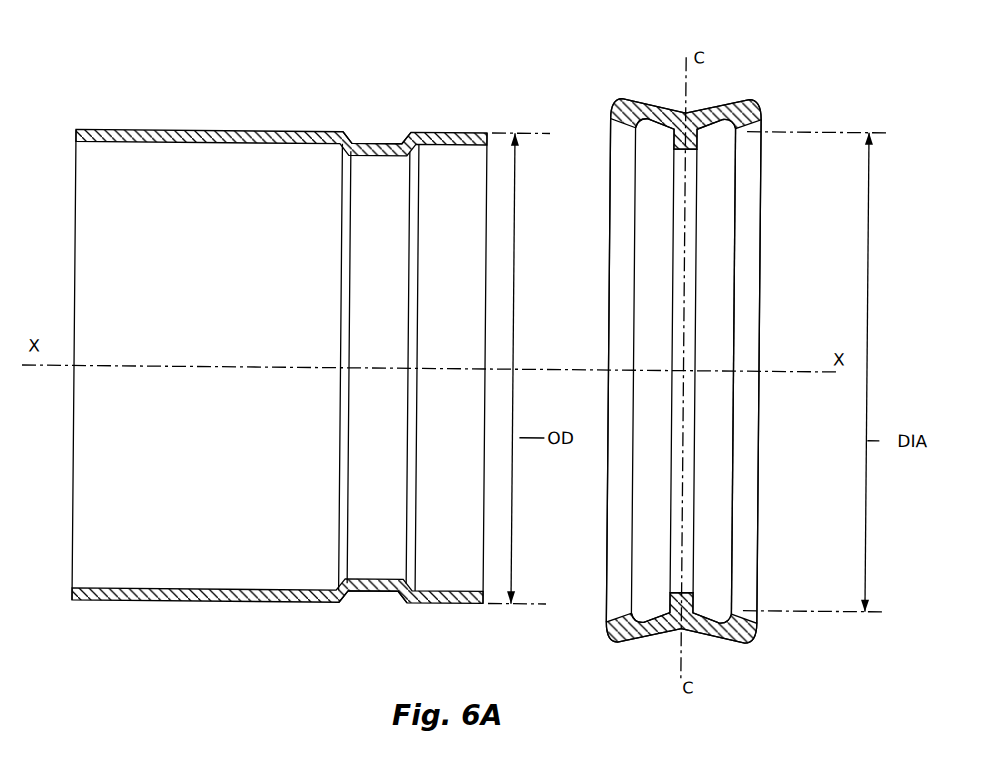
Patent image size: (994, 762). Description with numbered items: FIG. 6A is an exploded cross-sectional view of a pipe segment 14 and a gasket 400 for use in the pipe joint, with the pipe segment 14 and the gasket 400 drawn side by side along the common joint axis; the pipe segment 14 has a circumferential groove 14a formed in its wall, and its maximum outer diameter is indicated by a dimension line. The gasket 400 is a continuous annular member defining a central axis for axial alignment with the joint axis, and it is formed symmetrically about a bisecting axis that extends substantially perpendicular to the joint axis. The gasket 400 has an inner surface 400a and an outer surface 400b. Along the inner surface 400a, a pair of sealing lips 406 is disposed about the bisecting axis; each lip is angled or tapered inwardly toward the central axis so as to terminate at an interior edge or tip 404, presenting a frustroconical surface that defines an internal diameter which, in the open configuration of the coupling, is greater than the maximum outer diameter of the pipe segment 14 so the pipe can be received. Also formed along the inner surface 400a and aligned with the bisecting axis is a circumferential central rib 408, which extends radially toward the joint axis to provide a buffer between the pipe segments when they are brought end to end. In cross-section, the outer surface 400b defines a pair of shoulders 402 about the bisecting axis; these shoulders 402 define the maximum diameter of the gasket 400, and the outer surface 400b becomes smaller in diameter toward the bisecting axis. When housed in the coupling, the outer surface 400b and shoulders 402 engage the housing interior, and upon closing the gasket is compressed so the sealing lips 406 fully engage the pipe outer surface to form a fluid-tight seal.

The pipe segment 14 is at (280, 331).
The circumferential groove 14a is at (384, 136).
The gasket 400 is at (695, 334).
The shoulders 402 is at (614, 96).
The interior edge or tip 404 is at (640, 250).
The sealing lips 406 is at (614, 166).
The central rib 408 is at (692, 297).
The inner surface 400a is at (722, 562).
The outer surface 400b is at (728, 645).